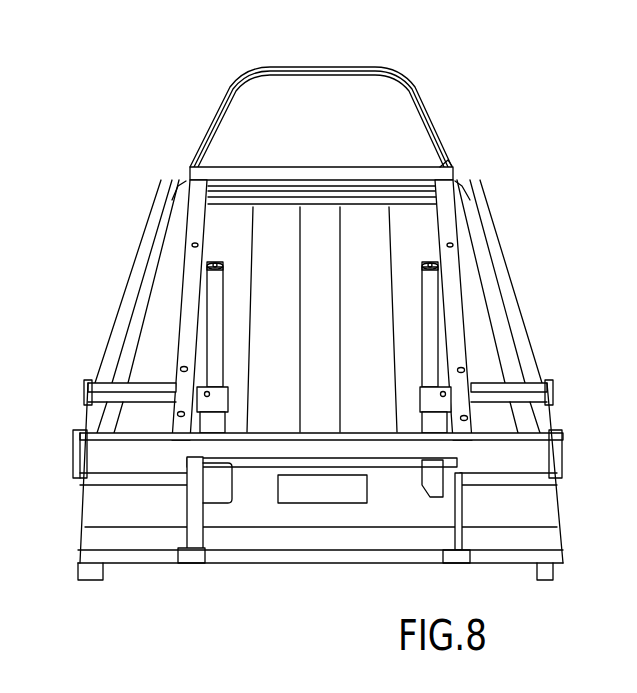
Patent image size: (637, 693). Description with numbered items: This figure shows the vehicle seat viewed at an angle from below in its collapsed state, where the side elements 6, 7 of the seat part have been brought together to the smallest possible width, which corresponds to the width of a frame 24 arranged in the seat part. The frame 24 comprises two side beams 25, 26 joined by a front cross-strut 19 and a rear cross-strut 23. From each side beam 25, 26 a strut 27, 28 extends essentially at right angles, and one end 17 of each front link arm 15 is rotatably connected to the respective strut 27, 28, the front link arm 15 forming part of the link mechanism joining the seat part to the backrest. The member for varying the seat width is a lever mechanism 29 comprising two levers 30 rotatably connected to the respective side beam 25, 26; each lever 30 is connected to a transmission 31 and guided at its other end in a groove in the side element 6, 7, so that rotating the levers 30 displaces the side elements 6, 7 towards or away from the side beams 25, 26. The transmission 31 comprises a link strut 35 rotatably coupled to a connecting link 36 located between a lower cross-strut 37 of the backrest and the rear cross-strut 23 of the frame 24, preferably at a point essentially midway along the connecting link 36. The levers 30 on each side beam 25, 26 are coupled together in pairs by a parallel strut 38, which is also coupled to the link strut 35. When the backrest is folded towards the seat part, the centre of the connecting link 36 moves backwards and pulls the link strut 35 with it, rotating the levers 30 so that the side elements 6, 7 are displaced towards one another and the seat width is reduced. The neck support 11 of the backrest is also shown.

The side element 6 is at (180, 260).
The side element 7 is at (462, 259).
The neck support 11 is at (268, 67).
The front link arm 15 is at (88, 410).
The end of front link arm 17 is at (92, 386).
The front cross-strut 19 is at (231, 166).
The rear cross-strut 23 is at (542, 463).
The frame 24 is at (453, 168).
The side beam 25 is at (197, 200).
The side beam 26 is at (455, 186).
The strut 27 is at (137, 383).
The strut 28 is at (508, 388).
The lever mechanism 29 is at (414, 320).
The lever 30 is at (214, 262).
The transmission 31 is at (243, 478).
The link strut 35 is at (423, 490).
The connecting link 36 is at (462, 518).
The lower cross-strut 37 is at (153, 563).
The parallel strut 38 is at (218, 292).